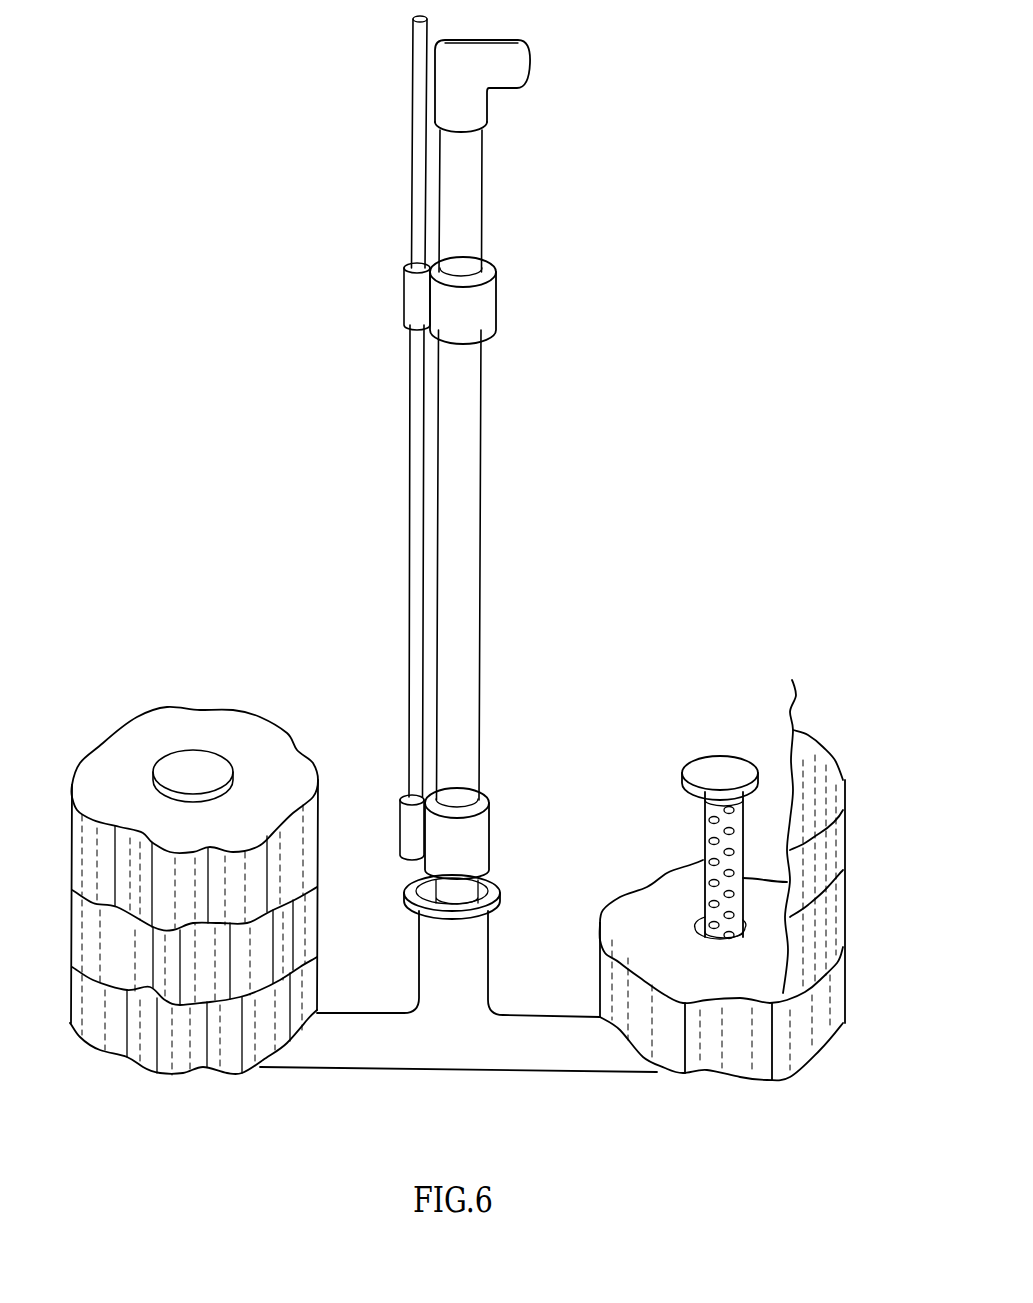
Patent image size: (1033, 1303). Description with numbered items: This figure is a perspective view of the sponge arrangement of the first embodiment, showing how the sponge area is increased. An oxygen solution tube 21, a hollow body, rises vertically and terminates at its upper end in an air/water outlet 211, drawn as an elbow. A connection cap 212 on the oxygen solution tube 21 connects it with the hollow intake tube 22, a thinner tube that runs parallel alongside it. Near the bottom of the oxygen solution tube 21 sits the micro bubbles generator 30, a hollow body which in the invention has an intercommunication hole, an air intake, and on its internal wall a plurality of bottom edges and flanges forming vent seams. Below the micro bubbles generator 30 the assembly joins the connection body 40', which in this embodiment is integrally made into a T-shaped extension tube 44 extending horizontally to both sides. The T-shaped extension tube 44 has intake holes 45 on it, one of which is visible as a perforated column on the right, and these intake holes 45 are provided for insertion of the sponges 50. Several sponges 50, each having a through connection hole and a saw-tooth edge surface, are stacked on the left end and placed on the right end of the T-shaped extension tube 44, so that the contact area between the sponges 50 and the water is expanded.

The oxygen solution tube 21 is at (458, 608).
The air/water outlet 211 is at (512, 58).
The connection cap 212 is at (477, 303).
The intake tube 22 is at (415, 610).
The micro bubbles generator 30 is at (473, 838).
The connection body 40' is at (458, 946).
The T-shaped extension tube 44 is at (443, 1050).
The intake holes 45 is at (712, 840).
The sponge 50 is at (308, 837).